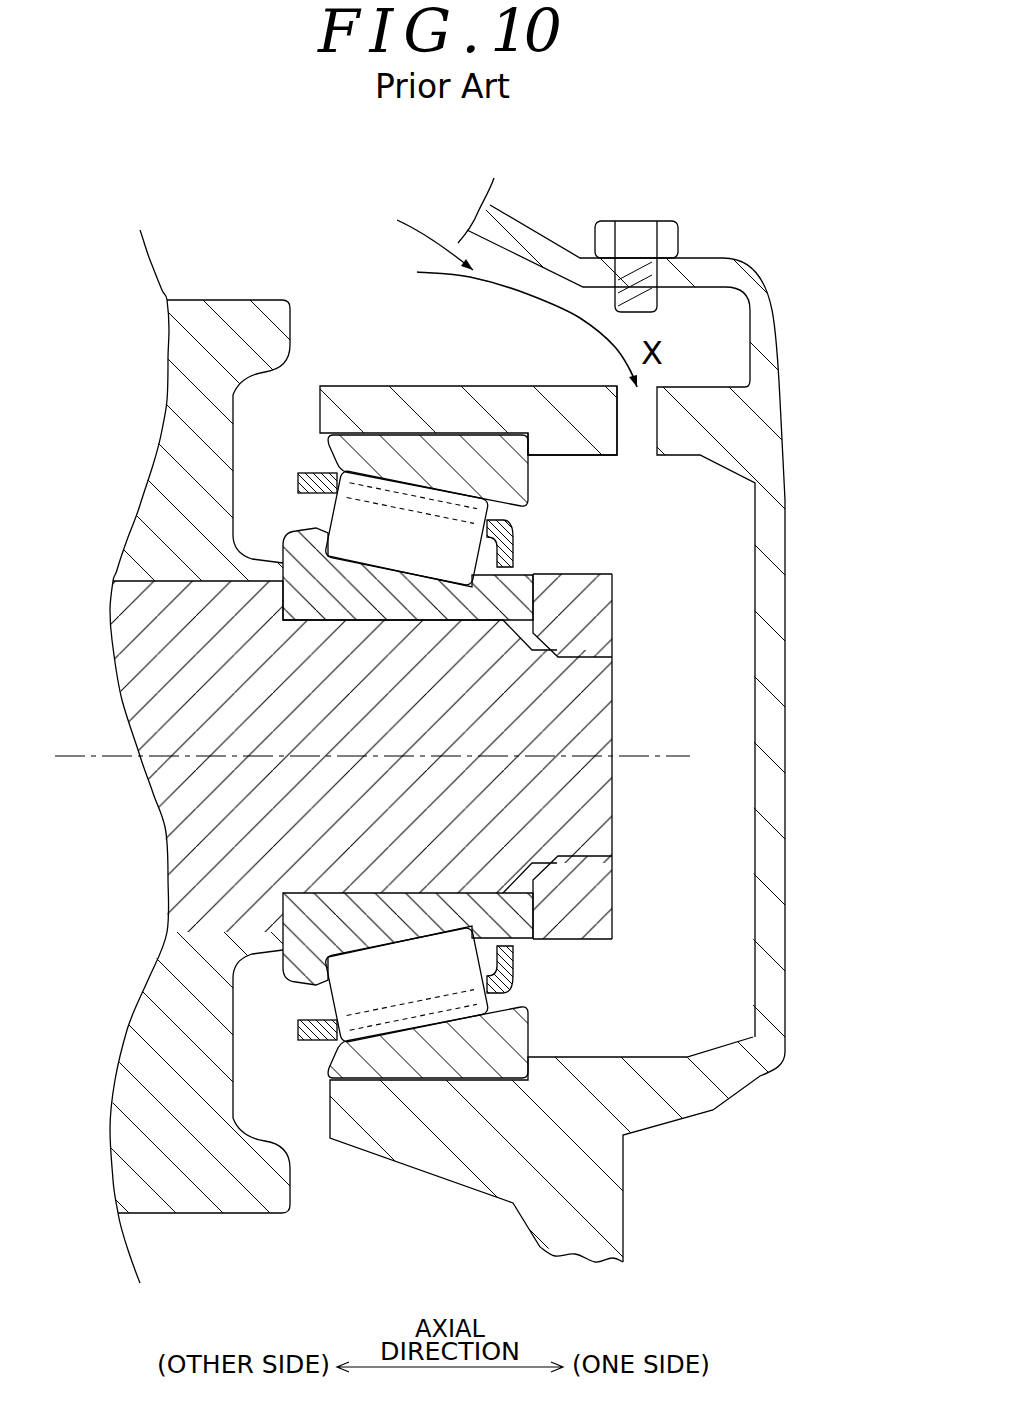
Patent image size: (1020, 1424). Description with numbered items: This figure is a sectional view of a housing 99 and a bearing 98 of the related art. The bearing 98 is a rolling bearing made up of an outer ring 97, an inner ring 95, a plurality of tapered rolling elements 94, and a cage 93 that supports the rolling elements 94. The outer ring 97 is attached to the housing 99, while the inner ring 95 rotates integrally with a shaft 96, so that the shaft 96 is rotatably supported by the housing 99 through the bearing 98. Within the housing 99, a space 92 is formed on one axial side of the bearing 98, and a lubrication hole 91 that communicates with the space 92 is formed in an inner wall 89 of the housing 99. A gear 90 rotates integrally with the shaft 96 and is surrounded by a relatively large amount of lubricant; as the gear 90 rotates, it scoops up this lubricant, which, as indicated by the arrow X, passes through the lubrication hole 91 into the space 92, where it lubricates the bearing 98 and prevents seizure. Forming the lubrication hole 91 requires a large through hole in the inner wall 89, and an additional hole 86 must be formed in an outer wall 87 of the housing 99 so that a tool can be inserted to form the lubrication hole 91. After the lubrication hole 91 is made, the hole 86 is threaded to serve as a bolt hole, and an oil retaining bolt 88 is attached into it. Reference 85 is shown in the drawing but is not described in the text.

The external force direction 85 is at (414, 238).
The hole 86 is at (647, 258).
The outer wall 87 is at (537, 256).
The oil retaining bolt 88 is at (633, 237).
The inner wall 89 is at (446, 398).
The gear 90 is at (183, 438).
The lubrication hole 91 is at (618, 440).
The space 92 is at (723, 648).
The cage 93 is at (513, 958).
The rolling elements (tapered rollers) 94 is at (385, 960).
The inner ring 95 is at (324, 907).
The shaft 96 is at (197, 813).
The outer ring 97 is at (530, 1040).
The bearing 98 is at (415, 1082).
The housing 99 is at (790, 560).